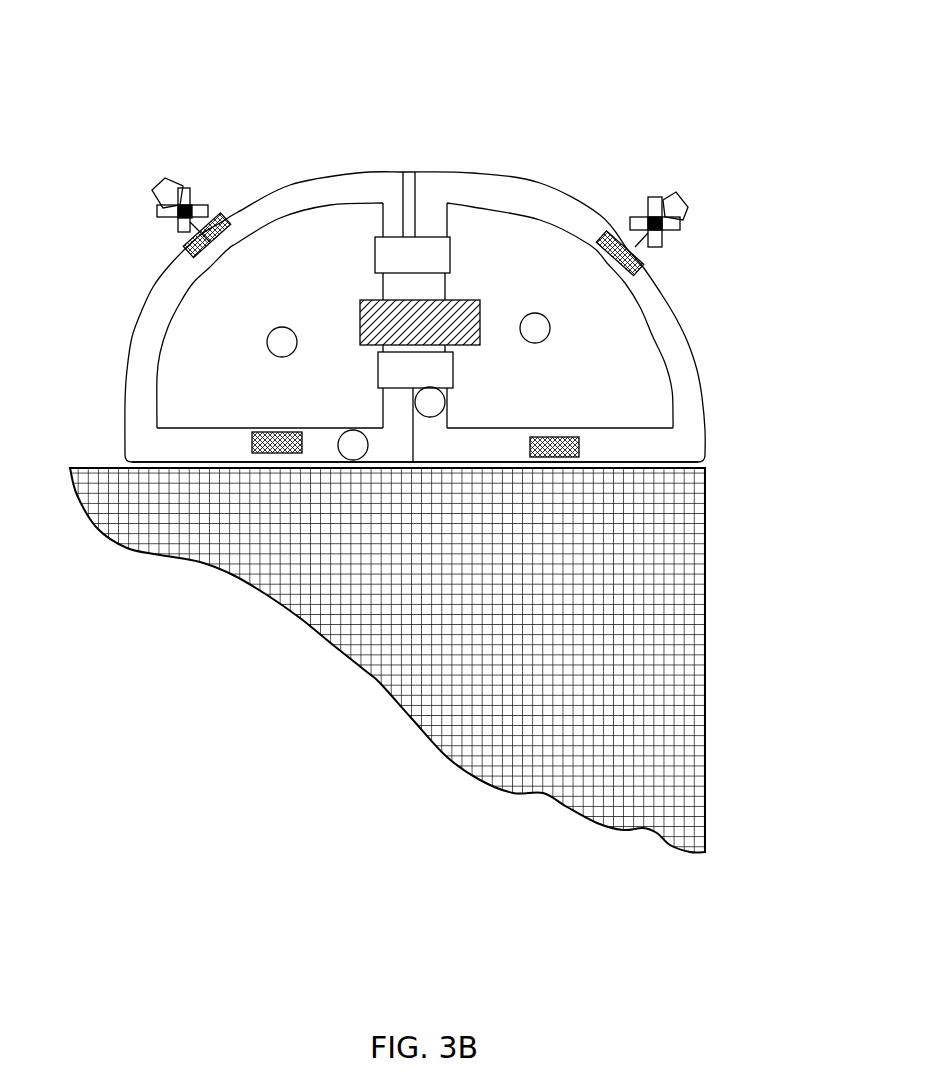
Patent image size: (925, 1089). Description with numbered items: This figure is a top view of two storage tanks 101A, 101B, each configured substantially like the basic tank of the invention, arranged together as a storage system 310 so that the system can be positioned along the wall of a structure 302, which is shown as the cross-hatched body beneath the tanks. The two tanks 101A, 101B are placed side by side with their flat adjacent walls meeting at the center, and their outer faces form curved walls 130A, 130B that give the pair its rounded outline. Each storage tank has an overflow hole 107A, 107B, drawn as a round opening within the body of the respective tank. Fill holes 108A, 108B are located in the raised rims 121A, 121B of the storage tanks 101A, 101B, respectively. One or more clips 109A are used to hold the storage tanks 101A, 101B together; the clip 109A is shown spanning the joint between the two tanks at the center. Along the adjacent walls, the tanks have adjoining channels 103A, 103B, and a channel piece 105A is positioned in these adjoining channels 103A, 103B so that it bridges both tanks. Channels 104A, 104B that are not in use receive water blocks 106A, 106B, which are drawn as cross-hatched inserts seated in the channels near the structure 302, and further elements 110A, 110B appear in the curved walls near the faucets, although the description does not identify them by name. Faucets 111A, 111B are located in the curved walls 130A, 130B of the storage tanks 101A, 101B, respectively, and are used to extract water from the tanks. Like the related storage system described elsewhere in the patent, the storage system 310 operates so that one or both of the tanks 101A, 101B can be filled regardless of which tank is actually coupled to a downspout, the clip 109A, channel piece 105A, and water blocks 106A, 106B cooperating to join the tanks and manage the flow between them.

The storage tank 101A is at (514, 162).
The storage tank 101B is at (241, 195).
The adjoining channel 103A is at (452, 275).
The adjoining channel 103B is at (385, 290).
The channel 104A is at (565, 435).
The channel 104B is at (253, 440).
The channel piece 105A is at (472, 297).
The water block 106A is at (672, 279).
The water block 106B is at (157, 333).
The overflow hole 107A is at (543, 305).
The overflow hole 107B is at (267, 338).
The fill hole 108A is at (445, 400).
The fill hole 108B is at (352, 430).
The clip 109A is at (403, 172).
The upper seal A 110A is at (615, 228).
The upper seal B 110B is at (195, 256).
The faucet 111A is at (685, 195).
The faucet 111B is at (157, 182).
The raised rim 121A is at (673, 342).
The raised rim 121B is at (150, 352).
The curved wall 130A is at (655, 277).
The curved wall 130B is at (290, 185).
The structure 302 is at (710, 520).
The storage system 310 is at (457, 660).